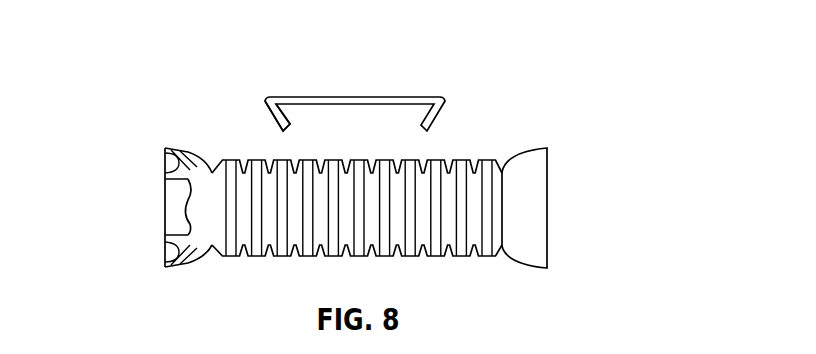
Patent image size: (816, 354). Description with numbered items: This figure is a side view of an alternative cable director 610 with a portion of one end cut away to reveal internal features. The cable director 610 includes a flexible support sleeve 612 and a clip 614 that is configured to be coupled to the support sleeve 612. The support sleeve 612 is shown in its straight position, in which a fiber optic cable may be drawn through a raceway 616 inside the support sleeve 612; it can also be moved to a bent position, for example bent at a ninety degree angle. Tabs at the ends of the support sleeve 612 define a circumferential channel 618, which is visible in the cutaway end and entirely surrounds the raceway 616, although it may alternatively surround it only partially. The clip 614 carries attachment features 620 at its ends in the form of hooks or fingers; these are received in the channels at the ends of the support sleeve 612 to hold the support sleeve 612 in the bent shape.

The cable director 610 is at (170, 85).
The support sleeve 612 is at (455, 160).
The clip 614 is at (357, 102).
The raceway 616 is at (165, 192).
The circumferential channel 618 is at (165, 250).
The attachment feature 620 is at (287, 120).